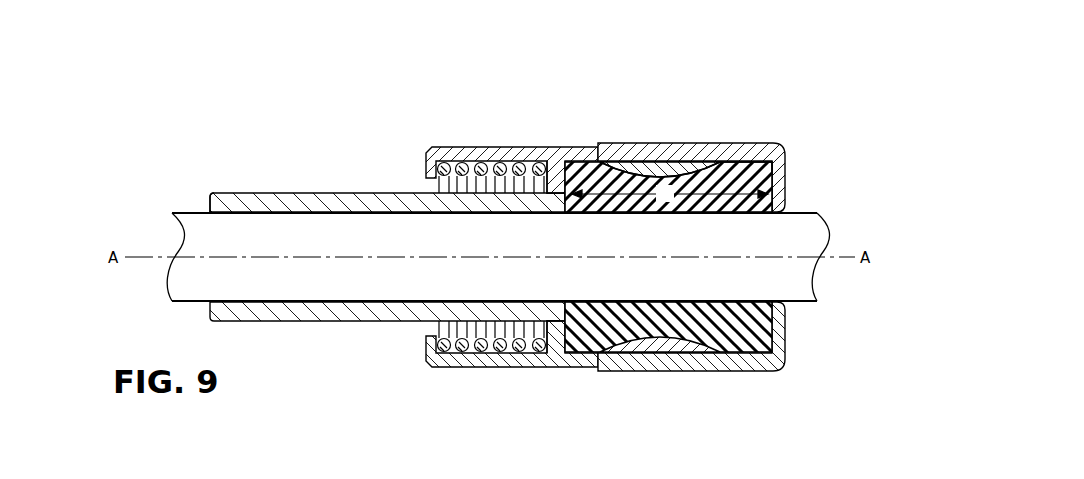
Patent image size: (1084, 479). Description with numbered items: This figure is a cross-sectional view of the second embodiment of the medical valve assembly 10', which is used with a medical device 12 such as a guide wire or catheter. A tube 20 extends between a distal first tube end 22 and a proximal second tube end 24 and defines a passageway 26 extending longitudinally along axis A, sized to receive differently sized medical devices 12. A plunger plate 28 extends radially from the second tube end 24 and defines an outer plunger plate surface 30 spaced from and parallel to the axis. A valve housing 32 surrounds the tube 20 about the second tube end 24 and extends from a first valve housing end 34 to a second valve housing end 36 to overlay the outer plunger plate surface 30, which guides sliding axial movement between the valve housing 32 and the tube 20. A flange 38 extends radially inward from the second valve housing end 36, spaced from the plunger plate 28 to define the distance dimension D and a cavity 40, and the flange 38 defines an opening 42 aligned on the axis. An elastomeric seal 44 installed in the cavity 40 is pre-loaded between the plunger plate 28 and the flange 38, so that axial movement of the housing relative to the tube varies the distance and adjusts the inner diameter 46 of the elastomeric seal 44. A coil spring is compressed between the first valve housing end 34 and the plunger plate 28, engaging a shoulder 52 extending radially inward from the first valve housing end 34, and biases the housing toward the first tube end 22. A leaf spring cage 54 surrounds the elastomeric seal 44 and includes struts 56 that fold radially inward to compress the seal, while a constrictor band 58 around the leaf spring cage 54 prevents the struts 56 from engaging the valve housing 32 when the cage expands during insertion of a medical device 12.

The medical valve assembly 10' is at (638, 200).
The medical device 12 is at (195, 242).
The tube 20 is at (388, 192).
The first tube end 22 is at (210, 199).
The second tube end 24 is at (669, 129).
The passageway 26 is at (237, 298).
The plunger plate 28 is at (534, 166).
The outer plunger plate surface 30 is at (556, 175).
The valve housing 32 is at (626, 207).
The first valve housing end 34 is at (426, 158).
The second valve housing end 36 is at (787, 143).
The flange 38 is at (787, 170).
The cavity 40 is at (669, 362).
The opening 42 is at (780, 218).
The elastomeric seal 44 is at (737, 165).
The inner diameter 46 is at (758, 301).
The shoulder 52 is at (440, 346).
The leaf spring cage 54 is at (665, 340).
The struts 56 is at (607, 163).
The constrictor band 58 is at (655, 174).